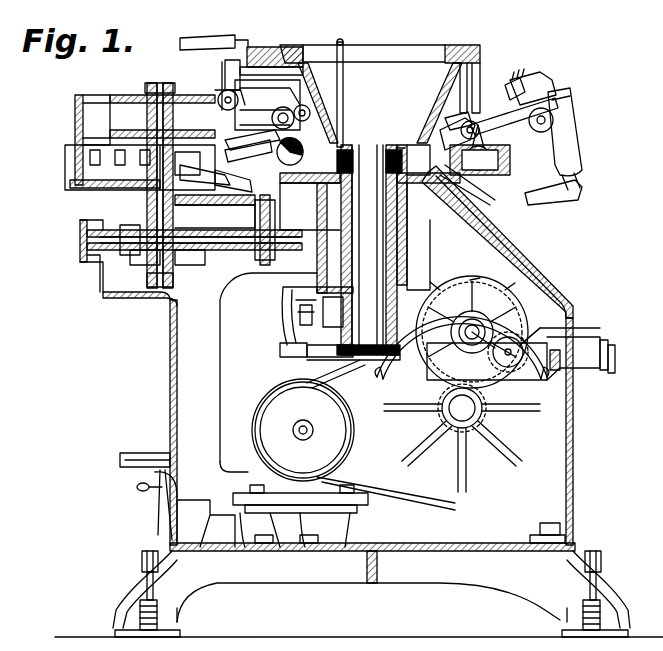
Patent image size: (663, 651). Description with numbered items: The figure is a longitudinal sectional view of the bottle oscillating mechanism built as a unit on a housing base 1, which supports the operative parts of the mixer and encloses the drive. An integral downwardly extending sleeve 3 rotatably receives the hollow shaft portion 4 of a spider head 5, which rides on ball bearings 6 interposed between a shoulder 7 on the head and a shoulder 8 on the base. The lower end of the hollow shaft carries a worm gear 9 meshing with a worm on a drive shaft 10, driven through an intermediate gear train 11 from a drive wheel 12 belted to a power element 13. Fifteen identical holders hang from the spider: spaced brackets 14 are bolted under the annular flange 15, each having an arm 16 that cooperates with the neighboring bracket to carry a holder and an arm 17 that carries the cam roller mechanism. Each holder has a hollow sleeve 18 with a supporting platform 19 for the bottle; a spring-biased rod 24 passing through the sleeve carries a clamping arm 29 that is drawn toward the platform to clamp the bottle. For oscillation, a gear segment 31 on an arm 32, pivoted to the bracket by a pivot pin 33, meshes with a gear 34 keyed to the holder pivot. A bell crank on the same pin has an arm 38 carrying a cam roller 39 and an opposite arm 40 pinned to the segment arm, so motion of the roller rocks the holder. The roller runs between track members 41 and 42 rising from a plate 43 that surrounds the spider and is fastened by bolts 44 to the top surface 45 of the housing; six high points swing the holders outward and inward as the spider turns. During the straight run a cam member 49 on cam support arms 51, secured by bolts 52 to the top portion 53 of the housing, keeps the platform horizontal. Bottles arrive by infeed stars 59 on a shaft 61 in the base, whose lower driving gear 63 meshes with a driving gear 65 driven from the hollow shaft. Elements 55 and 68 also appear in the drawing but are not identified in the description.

The housing base 1 is at (572, 440).
The sleeve 3 is at (407, 203).
The hollow shaft portion 4 is at (360, 230).
The spider head 5 is at (445, 88).
The ball bearings 6 is at (395, 160).
The shoulder 7 is at (403, 148).
The shoulder 8 is at (395, 182).
The worm gear 9 is at (290, 326).
The drive shaft 10 is at (470, 342).
The intermediate gear train 11 is at (520, 305).
The drive wheel 12 is at (508, 462).
The power element 13 is at (275, 392).
The brackets 14 is at (270, 60).
The annular flange 15 is at (292, 62).
The arm 16 is at (222, 76).
The arm 17 is at (280, 90).
The hollow sleeve 18 is at (572, 142).
The supporting platform 19 is at (518, 88).
The rod 24 is at (575, 176).
The clamping arm 29 is at (195, 45).
The gear segment 31 is at (563, 75).
The arm 32 is at (500, 105).
The pivot pin 33 is at (295, 125).
The gear 34 is at (285, 90).
The arm 38 is at (300, 140).
The cam roller 39 is at (296, 165).
The arm 40 is at (300, 105).
The track member 41 is at (465, 148).
The track member 42 is at (488, 158).
The plate 43 is at (455, 178).
The bolts 44 is at (335, 198).
The top surface 45 is at (470, 192).
The cam member 49 is at (190, 158).
The cam support arms 51 is at (215, 216).
The bolts 52 is at (215, 208).
The top portion 53 is at (233, 182).
The link 55 is at (248, 159).
The infeed stars 59 is at (137, 95).
The shaft 61 is at (150, 118).
The driving gear 63 is at (88, 262).
The driving gear 65 is at (232, 250).
The support column 68 is at (312, 250).